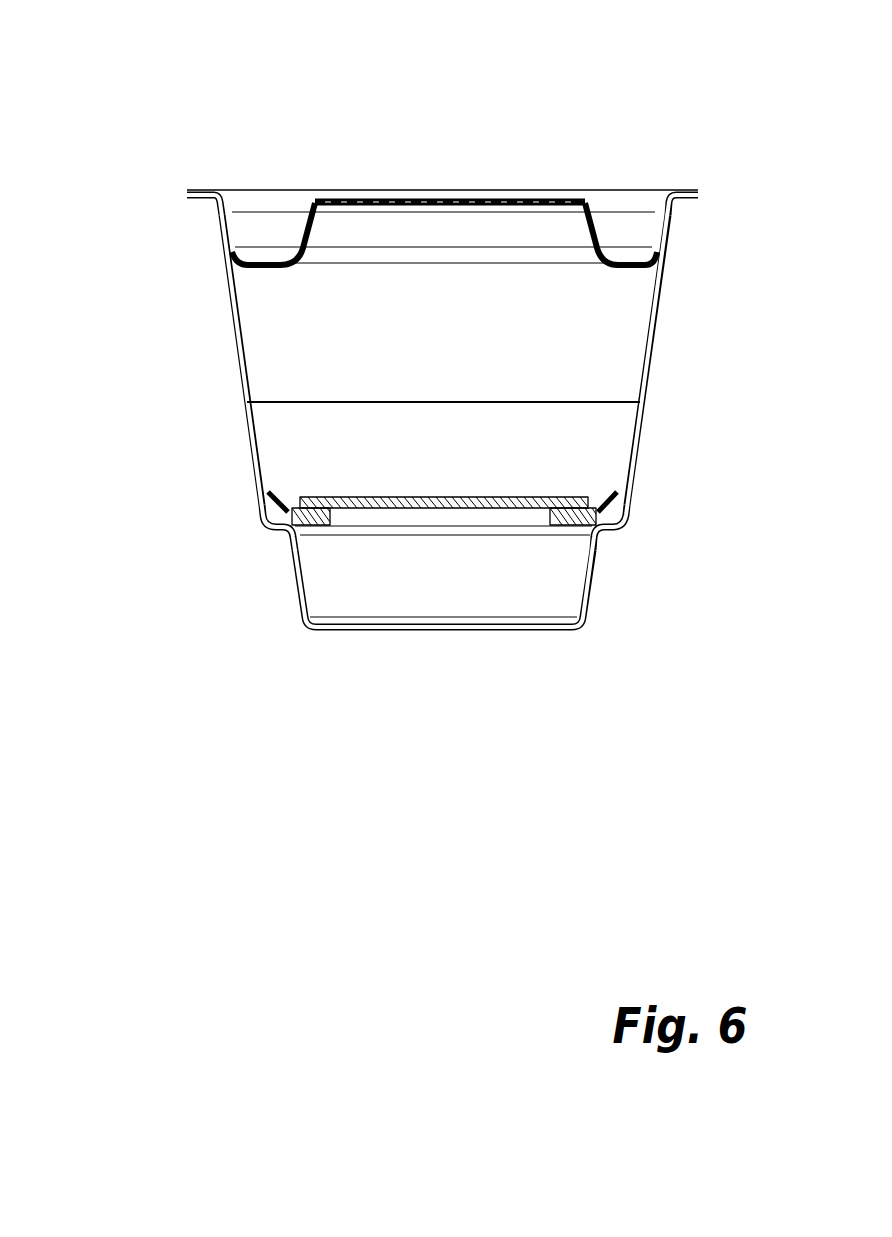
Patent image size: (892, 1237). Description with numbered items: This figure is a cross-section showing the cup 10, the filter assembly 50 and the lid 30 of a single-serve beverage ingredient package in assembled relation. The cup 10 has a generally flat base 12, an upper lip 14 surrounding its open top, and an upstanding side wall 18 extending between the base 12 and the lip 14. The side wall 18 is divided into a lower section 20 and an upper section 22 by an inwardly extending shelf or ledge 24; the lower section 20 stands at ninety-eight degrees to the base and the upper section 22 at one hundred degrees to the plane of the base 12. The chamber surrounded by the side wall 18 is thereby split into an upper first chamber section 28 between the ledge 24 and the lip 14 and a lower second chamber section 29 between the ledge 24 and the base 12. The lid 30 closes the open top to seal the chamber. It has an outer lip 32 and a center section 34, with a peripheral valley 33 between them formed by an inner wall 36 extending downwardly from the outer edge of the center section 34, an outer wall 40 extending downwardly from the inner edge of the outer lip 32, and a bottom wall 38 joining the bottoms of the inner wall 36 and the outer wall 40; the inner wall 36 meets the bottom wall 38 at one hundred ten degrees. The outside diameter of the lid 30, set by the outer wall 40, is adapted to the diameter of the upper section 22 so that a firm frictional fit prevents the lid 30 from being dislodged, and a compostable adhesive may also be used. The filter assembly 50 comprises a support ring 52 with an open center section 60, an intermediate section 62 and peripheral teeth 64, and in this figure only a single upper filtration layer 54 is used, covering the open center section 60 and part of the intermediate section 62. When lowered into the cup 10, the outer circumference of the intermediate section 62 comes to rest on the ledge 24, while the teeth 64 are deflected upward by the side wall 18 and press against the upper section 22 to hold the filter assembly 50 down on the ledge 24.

The cup 10 is at (257, 625).
The base 12 is at (430, 630).
The upper lip 14 is at (195, 205).
The side wall 18 is at (197, 368).
The lower section 20 is at (588, 590).
The upper section 22 is at (647, 391).
The ledge 24 is at (603, 533).
The upper first chamber section 28 is at (443, 350).
The lower second chamber section 29 is at (443, 587).
The lid 30 is at (440, 158).
The outer lip 32 is at (193, 190).
The peripheral valley 33 is at (623, 208).
The center section 34 is at (516, 197).
The inner wall 36 is at (588, 225).
The bottom wall 38 is at (626, 261).
The outer wall 40 is at (235, 220).
The filter assembly 50 is at (383, 468).
The support ring 52 is at (565, 533).
The upper filtration layer 54 is at (510, 490).
The open center section 60 is at (496, 528).
The intermediate section 62 is at (312, 518).
The peripheral teeth 64 is at (263, 513).